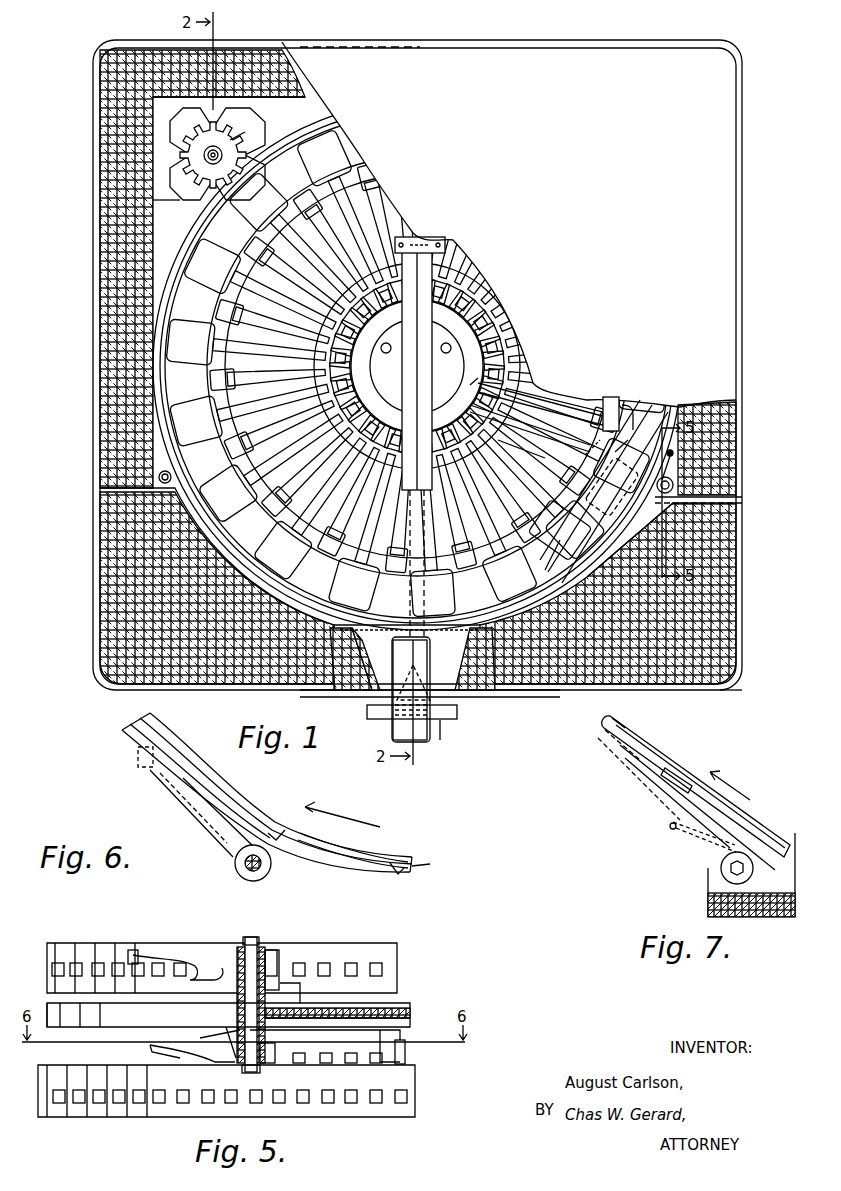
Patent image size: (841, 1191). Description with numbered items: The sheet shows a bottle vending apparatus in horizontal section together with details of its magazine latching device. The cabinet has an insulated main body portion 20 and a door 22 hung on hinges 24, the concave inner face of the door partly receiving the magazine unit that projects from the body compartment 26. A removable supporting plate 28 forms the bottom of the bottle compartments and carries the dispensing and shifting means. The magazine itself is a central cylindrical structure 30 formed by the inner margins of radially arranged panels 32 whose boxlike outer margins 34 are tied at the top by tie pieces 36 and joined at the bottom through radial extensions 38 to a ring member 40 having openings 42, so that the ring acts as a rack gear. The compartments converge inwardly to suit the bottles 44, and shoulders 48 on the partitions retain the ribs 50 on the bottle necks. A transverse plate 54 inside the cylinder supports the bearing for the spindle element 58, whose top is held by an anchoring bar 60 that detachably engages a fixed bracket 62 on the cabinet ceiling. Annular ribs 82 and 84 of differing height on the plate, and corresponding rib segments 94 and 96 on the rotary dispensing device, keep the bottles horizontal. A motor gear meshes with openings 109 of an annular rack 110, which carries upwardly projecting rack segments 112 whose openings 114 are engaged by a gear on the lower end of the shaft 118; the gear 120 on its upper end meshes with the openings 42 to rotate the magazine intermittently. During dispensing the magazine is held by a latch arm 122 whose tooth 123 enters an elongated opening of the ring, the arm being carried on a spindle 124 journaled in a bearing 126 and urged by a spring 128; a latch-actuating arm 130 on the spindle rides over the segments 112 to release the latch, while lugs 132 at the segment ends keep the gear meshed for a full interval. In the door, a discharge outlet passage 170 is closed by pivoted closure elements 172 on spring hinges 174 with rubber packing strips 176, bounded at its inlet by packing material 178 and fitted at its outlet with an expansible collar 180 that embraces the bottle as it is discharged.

In FIG. 1, the main body portion 20 is at (745, 122).
In FIG. 7, the main body portion 20 is at (708, 915).
In FIG. 1, the door 22 is at (740, 684).
In FIG. 1, the hinges 24 is at (737, 500).
In FIG. 1, the body compartment 26 is at (180, 200).
In FIG. 1, the supporting plate 28 is at (660, 412).
In FIG. 7, the supporting plate 28 is at (708, 890).
In FIG. 5, the supporting plate 28 is at (412, 1010).
In FIG. 1, the central cylindrical structure 30 is at (352, 372).
In FIG. 1, the radially arranged panels 32 is at (282, 335).
In FIG. 1, the boxlike outer margins 34 is at (237, 435).
In FIG. 1, the tie pieces 36 is at (252, 312).
In FIG. 1, the radial extensions 38 is at (640, 405).
In FIG. 1, the ring member 40 is at (192, 200).
In FIG. 7, the ring member 40 is at (772, 838).
In FIG. 5, the ring member 40 is at (393, 946).
In FIG. 5, the openings 42 is at (374, 960).
In FIG. 1, the bottles 44 is at (430, 770).
In FIG. 1, the shoulders 48 is at (330, 392).
In FIG. 1, the ribs 50 is at (500, 350).
In FIG. 1, the transverse plate 54 is at (471, 380).
In FIG. 1, the spindle element 58 is at (425, 366).
In FIG. 1, the anchoring bar 60 is at (400, 415).
In FIG. 1, the fixed bracket 62 is at (432, 240).
In FIG. 1, the annular rib 82 is at (618, 398).
In FIG. 5, the annular rib 82 is at (412, 1000).
In FIG. 1, the annular rib 84 is at (540, 397).
In FIG. 1, the rib segments 94 is at (558, 555).
In FIG. 1, the rib segments 96 is at (520, 446).
In FIG. 5, the openings 109 is at (380, 1102).
In FIG. 6, the annular rack 110 is at (420, 867).
In FIG. 5, the annular rack 110 is at (410, 1078).
In FIG. 6, the rack segments 112 is at (360, 856).
In FIG. 5, the rack segments 112 is at (398, 1045).
In FIG. 5, the openings 114 is at (364, 1063).
In FIG. 1, the shaft 118 is at (204, 154).
In FIG. 1, the gear 120 is at (245, 140).
In FIG. 1, the latch arm 122 is at (604, 528).
In FIG. 7, the latch arm 122 is at (660, 825).
In FIG. 5, the latch arm 122 is at (158, 957).
In FIG. 1, the tooth 123 is at (639, 436).
In FIG. 7, the tooth 123 is at (638, 732).
In FIG. 1, the spindle 124 is at (604, 437).
In FIG. 6, the spindle 124 is at (240, 866).
In FIG. 5, the spindle 124 is at (258, 935).
In FIG. 5, the bearing 126 is at (207, 1042).
In FIG. 7, the spring 128 is at (672, 830).
In FIG. 5, the spring 128 is at (286, 965).
In FIG. 6, the latch-actuating arm 130 is at (165, 775).
In FIG. 5, the latch-actuating arm 130 is at (178, 1060).
In FIG. 6, the lugs 132 is at (276, 822).
In FIG. 5, the lugs 132 is at (270, 1062).
In FIG. 1, the discharge outlet passage 170 is at (458, 708).
In FIG. 1, the closure elements 172 is at (352, 698).
In FIG. 1, the spring hinges 174 is at (495, 625).
In FIG. 1, the rubber packing strips 176 is at (412, 690).
In FIG. 1, the packing material 178 is at (410, 690).
In FIG. 1, the expansible collar 180 is at (442, 730).